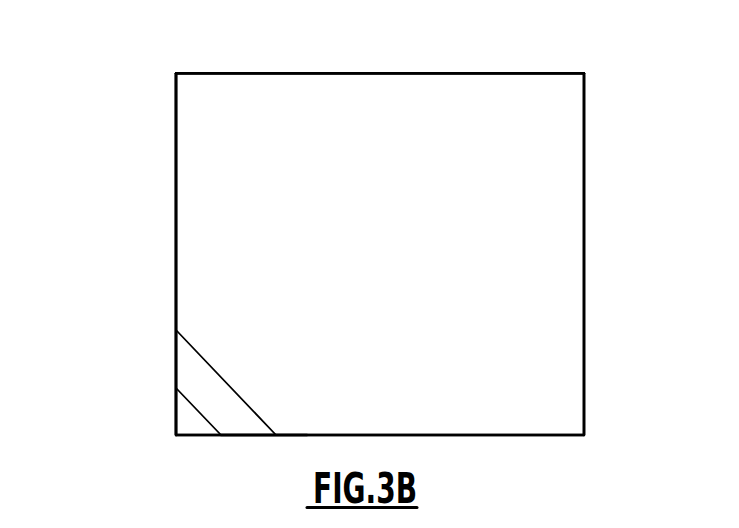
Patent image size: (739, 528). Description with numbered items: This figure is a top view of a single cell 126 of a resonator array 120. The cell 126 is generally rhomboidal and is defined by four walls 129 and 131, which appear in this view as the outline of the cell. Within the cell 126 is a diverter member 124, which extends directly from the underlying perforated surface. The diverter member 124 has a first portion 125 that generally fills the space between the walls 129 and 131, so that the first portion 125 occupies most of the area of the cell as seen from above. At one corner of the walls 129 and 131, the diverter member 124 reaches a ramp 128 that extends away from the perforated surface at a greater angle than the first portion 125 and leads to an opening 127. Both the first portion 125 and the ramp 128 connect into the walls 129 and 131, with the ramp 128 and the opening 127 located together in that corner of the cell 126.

The resonator array 120 is at (122, 238).
The diverter member 124 is at (452, 112).
The first portion 125 is at (360, 240).
The cell 126 is at (200, 148).
The opening 127 is at (185, 418).
The ramp 128 is at (188, 368).
The walls 129 is at (176, 188).
The walls 131 is at (307, 435).